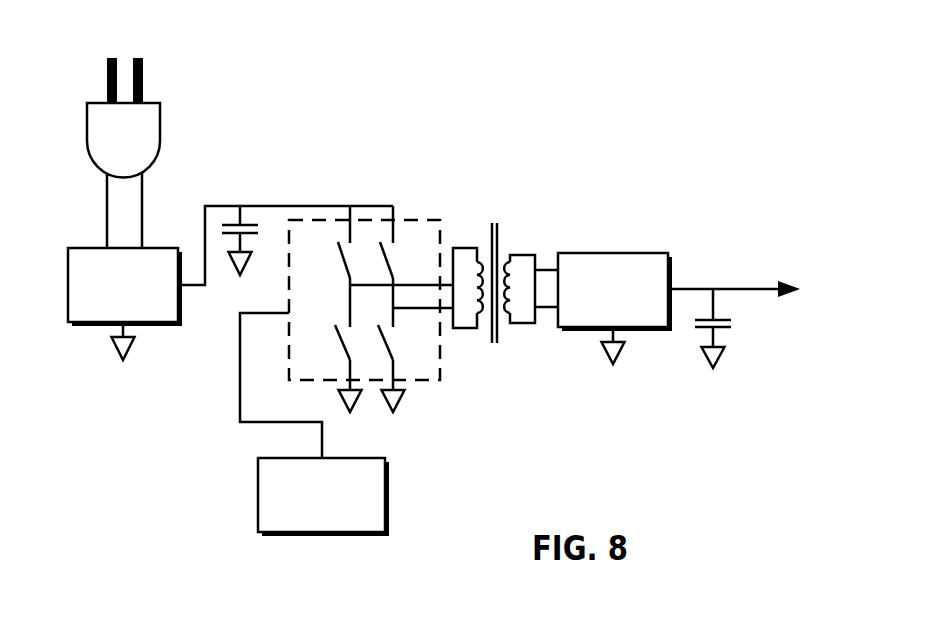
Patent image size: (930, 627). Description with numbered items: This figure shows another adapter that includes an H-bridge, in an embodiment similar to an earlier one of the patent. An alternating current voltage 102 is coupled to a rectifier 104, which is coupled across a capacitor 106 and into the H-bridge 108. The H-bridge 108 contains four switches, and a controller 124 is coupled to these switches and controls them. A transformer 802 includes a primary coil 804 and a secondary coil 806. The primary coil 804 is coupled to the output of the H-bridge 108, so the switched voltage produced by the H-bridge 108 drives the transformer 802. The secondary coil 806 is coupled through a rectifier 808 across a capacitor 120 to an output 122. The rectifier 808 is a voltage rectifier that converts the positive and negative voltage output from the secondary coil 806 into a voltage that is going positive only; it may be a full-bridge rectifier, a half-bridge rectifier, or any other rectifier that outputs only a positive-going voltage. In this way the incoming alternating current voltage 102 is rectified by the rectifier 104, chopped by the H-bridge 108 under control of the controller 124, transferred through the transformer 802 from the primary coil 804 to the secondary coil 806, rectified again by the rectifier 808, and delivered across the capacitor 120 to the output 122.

The alternating current voltage 102 is at (167, 97).
The rectifier 104 is at (230, 283).
The capacitor 106 is at (223, 215).
The H-bridge 108 is at (435, 385).
The controller 124 is at (314, 424).
The transformer 802 is at (485, 223).
The primary coil 804 is at (458, 213).
The secondary coil 806 is at (520, 243).
The rectifier 808 is at (615, 308).
The capacitor 120 is at (685, 333).
The output 122 is at (787, 277).